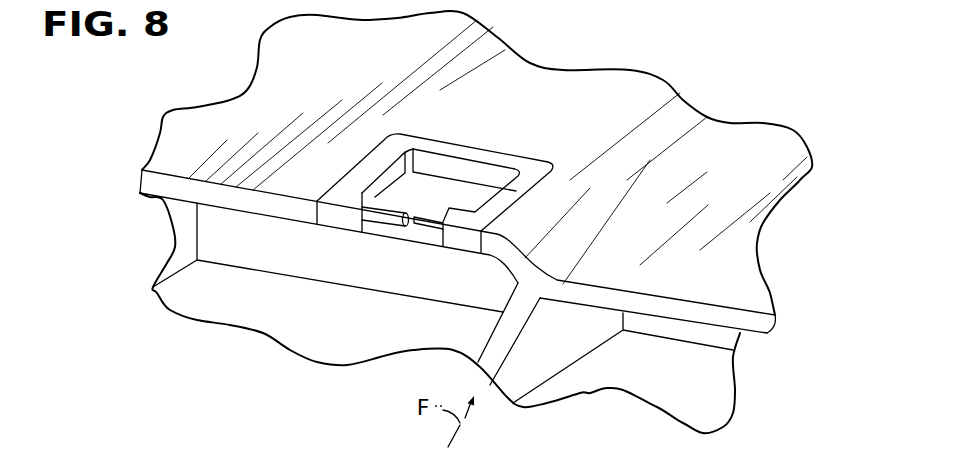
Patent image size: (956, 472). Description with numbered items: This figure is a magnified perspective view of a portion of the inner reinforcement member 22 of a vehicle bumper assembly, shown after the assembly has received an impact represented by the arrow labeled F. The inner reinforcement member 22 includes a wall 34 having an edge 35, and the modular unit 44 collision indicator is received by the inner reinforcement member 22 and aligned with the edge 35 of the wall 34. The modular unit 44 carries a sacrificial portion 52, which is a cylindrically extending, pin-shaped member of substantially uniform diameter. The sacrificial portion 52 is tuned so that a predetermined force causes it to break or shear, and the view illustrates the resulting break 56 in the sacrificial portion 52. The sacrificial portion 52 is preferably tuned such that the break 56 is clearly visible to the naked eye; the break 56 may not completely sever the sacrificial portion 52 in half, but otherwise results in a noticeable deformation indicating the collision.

The inner reinforcement member 22 is at (702, 58).
The wall 34 is at (720, 141).
The edge 35 is at (293, 208).
The modular unit 44 is at (494, 145).
The sacrificial portion 52 is at (428, 228).
The break 56 is at (409, 236).